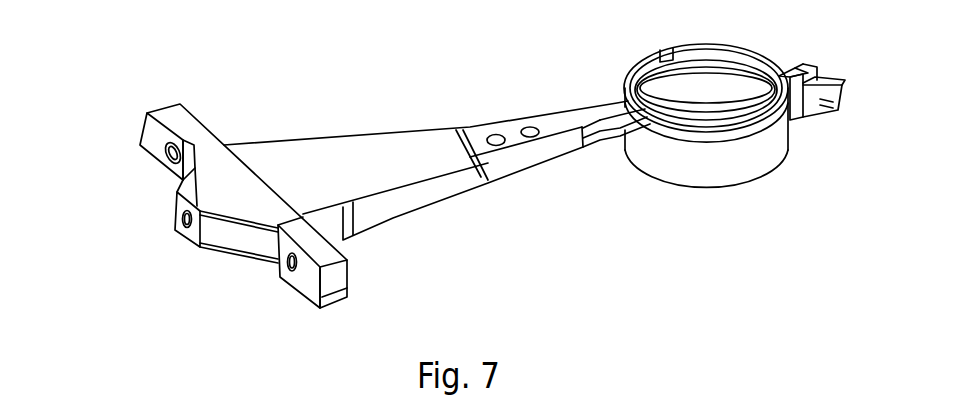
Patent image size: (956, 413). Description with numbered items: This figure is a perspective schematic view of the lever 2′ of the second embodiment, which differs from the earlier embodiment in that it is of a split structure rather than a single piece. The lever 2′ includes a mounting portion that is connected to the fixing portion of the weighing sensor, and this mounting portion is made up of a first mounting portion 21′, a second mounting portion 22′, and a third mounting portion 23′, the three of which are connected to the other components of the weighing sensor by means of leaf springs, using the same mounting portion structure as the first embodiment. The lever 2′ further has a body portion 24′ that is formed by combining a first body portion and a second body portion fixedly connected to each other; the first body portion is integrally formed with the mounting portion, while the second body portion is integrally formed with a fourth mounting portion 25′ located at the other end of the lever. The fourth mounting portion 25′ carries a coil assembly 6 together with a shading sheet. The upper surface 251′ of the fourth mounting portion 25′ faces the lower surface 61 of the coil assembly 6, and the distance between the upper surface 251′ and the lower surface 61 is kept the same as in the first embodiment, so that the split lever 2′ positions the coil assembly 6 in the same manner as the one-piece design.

The lever 2′ is at (435, 178).
The first mounting portion 21′ is at (115, 160).
The second mounting portion 22′ is at (263, 286).
The third mounting portion 23′ is at (136, 244).
The body portion 24′ is at (437, 200).
The fourth mounting portion 25′ is at (729, 126).
The upper surface 251′ is at (542, 90).
The coil assembly 6 is at (731, 164).
The lower surface 61 is at (690, 207).